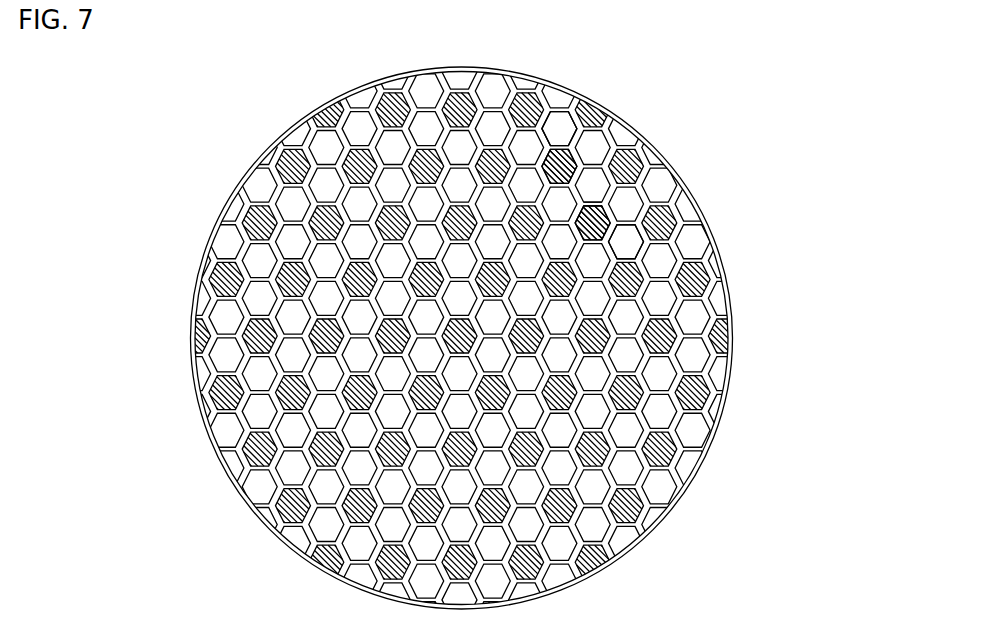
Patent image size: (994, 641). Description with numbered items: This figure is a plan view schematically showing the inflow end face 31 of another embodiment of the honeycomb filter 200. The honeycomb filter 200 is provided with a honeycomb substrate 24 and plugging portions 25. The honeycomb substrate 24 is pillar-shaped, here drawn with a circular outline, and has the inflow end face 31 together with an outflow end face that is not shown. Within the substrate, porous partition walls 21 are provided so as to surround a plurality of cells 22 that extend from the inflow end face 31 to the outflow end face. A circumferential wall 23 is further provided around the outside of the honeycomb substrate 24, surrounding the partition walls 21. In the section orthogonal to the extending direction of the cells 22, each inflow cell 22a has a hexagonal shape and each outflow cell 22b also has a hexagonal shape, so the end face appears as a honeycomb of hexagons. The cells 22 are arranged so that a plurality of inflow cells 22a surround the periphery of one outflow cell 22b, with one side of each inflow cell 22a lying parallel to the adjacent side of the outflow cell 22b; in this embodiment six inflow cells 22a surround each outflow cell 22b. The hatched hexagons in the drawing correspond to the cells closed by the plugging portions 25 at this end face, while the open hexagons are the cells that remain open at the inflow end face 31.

The honeycomb filter 200 is at (789, 51).
The partition walls 21 is at (603, 203).
The cells 22 is at (712, 193).
The inflow cell 22a is at (626, 242).
The outflow cell 22b is at (592, 223).
The circumferential wall 23 is at (733, 341).
The honeycomb substrate 24 is at (548, 132).
The plugging portions 25 is at (558, 167).
The inflow end face 31 is at (262, 146).